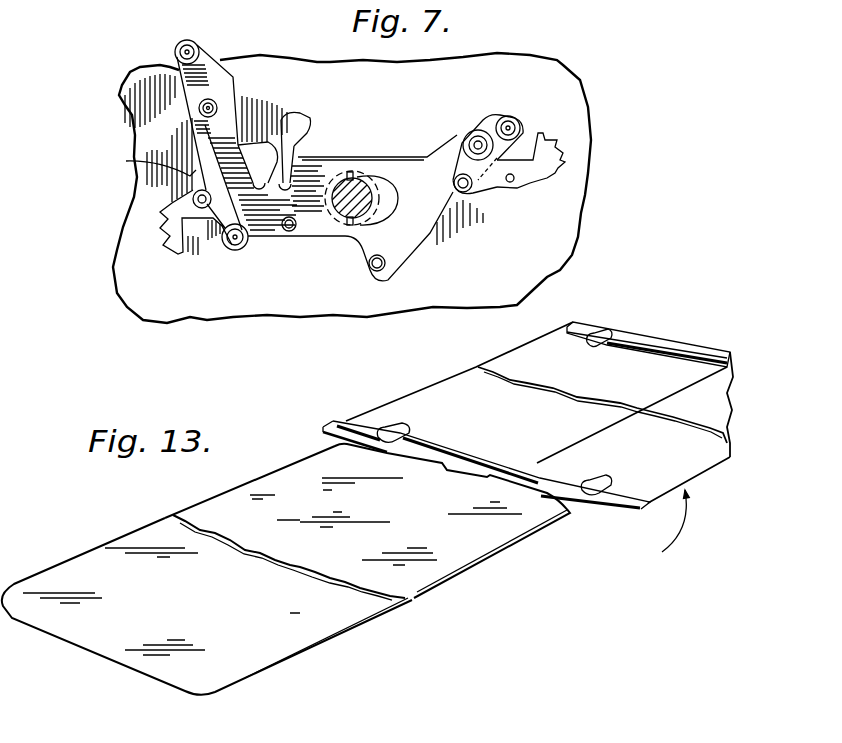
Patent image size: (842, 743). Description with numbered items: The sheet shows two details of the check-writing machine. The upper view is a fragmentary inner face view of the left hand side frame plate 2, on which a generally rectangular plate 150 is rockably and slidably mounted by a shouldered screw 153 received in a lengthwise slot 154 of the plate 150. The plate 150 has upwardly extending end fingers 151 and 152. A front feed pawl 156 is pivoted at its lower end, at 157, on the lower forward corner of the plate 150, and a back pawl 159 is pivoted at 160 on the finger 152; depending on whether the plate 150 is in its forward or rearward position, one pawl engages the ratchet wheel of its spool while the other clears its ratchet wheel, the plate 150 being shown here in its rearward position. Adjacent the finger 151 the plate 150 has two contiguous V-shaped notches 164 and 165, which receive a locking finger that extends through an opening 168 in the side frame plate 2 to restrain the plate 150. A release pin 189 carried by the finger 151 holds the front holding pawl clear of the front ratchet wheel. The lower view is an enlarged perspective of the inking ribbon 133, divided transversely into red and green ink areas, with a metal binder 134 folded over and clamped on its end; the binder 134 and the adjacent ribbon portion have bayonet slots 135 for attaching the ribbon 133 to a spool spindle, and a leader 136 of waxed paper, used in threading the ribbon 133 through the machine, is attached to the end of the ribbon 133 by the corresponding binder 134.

In FIG. 7, the side frame plate 2 is at (560, 68).
In FIG. 7, the plate 150 is at (335, 150).
In FIG. 7, the end finger 151 is at (212, 63).
In FIG. 7, the end finger 152 is at (492, 118).
In FIG. 7, the shouldered screw 153 is at (358, 178).
In FIG. 7, the lengthwise slot 154 is at (393, 175).
In FIG. 7, the front feed pawl 156 is at (220, 222).
In FIG. 7, the pivot 157 is at (242, 249).
In FIG. 7, the back pawl 159 is at (531, 182).
In FIG. 7, the pivot 160 is at (475, 140).
In FIG. 7, the V-shaped notch 164 is at (266, 140).
In FIG. 7, the V-shaped notch 165 is at (297, 143).
In FIG. 7, the opening 168 is at (143, 161).
In FIG. 7, the release pin 189 is at (183, 45).
In FIG. 13, the inking ribbon 133 is at (440, 380).
In FIG. 13, the metal binder 134 is at (645, 340).
In FIG. 13, the bayonet slots 135 is at (600, 332).
In FIG. 13, the leader 136 is at (235, 500).